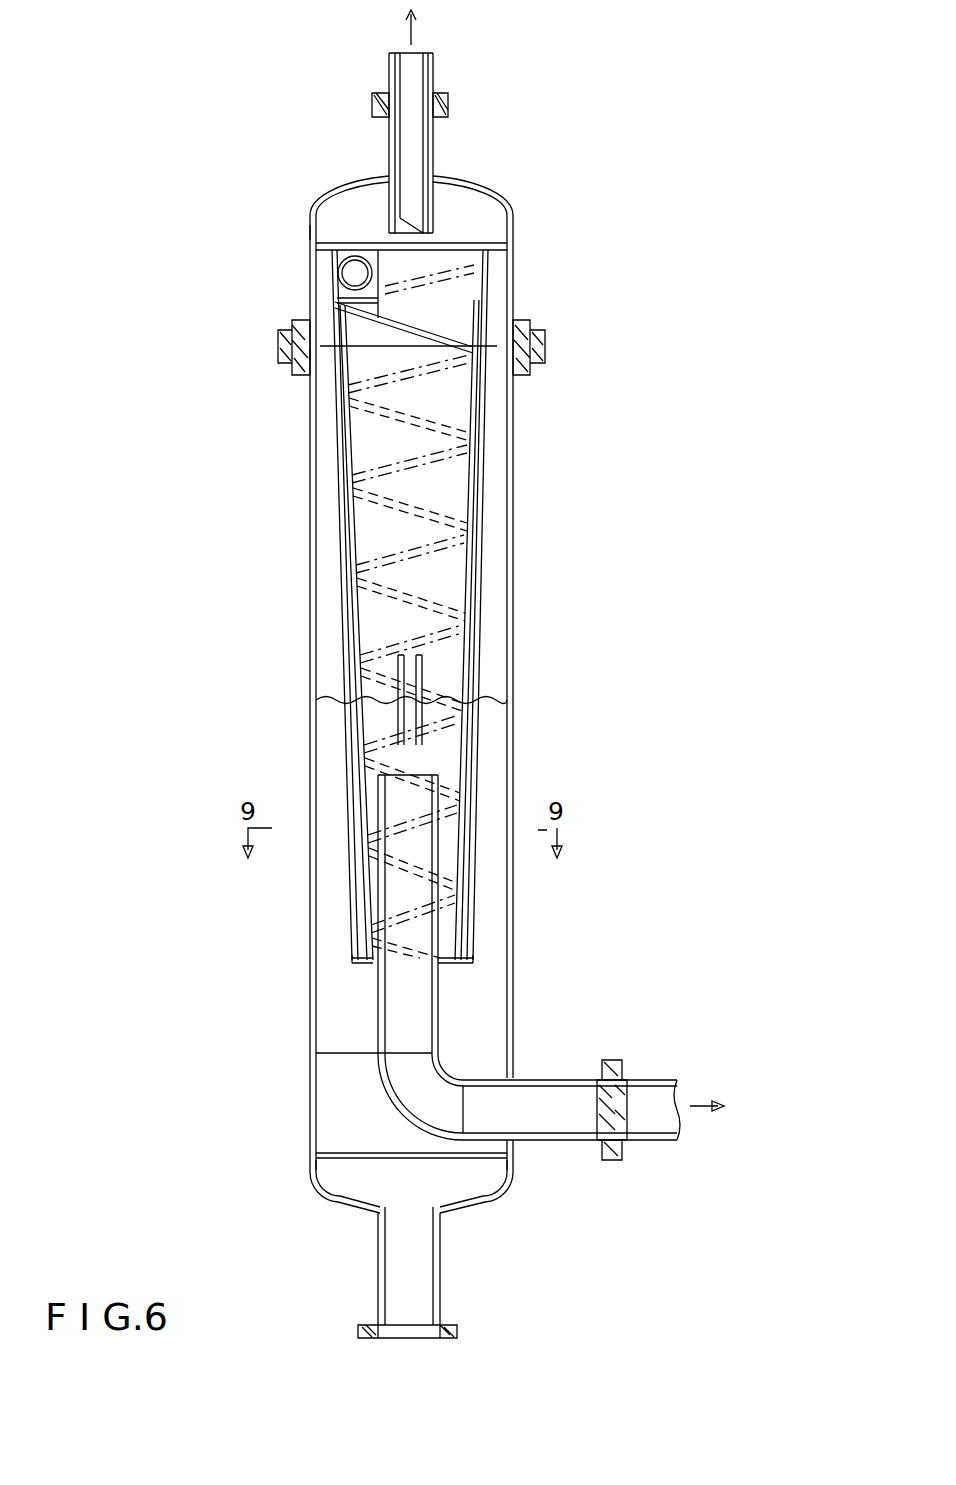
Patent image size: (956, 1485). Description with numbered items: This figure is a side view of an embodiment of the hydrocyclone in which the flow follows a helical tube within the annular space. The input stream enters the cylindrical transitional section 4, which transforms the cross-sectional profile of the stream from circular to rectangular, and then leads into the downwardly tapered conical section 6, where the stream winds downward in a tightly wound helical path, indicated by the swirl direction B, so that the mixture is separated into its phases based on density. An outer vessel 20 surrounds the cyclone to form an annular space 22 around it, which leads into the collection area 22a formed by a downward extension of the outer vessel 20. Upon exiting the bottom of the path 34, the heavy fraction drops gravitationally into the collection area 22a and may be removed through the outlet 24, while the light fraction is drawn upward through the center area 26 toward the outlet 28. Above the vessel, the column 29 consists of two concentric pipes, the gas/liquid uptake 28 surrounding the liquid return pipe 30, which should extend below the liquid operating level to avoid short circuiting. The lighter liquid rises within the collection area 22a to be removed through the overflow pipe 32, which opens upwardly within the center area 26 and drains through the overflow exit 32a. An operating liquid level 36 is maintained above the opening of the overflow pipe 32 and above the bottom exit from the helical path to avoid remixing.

The transitional section 4 is at (176, 240).
The conical section 6 is at (176, 960).
The outer vessel 20 is at (311, 590).
The annular space 22 is at (328, 616).
The collection area 22a is at (350, 1105).
The outlet 24 is at (420, 1277).
The center area 26 is at (448, 578).
The outlet 28 is at (405, 218).
The column 29 is at (445, 148).
The liquid return pipe 30 is at (410, 150).
The overflow pipe 32 is at (372, 770).
The overflow exit 32a is at (647, 1125).
The bottom of the path 34 is at (475, 945).
The liquid level 36 is at (328, 698).
The swirl flow direction B is at (365, 438).